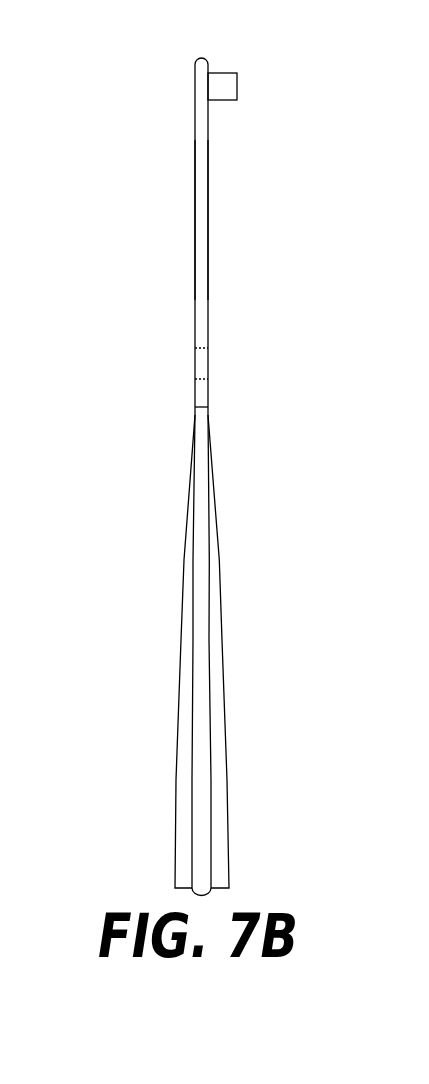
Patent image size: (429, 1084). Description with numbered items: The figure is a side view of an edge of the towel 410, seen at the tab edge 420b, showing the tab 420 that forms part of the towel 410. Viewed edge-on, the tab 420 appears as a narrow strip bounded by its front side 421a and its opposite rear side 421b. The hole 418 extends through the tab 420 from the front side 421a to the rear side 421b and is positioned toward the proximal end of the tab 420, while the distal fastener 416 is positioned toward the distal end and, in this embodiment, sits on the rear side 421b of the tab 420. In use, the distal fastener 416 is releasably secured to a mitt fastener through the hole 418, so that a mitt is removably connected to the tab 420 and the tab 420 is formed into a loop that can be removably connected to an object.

The towel 410 is at (360, 104).
The distal fastener 416 is at (237, 83).
The hole 418 is at (200, 368).
The tab 420 is at (194, 132).
The tab edge 420b is at (203, 397).
The front side 421a is at (194, 186).
The rear side 421b is at (209, 196).